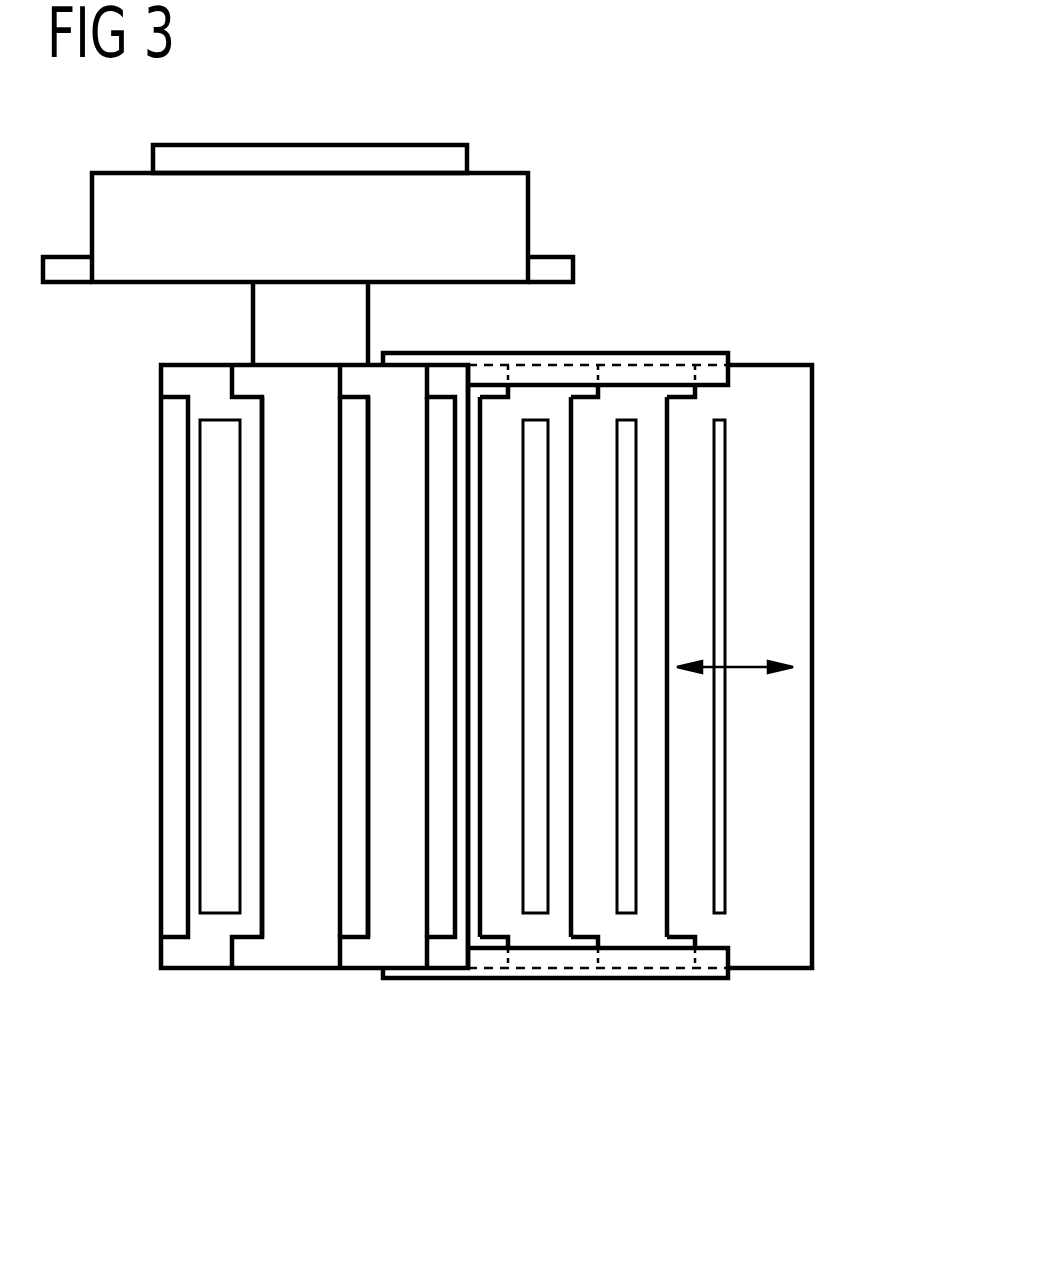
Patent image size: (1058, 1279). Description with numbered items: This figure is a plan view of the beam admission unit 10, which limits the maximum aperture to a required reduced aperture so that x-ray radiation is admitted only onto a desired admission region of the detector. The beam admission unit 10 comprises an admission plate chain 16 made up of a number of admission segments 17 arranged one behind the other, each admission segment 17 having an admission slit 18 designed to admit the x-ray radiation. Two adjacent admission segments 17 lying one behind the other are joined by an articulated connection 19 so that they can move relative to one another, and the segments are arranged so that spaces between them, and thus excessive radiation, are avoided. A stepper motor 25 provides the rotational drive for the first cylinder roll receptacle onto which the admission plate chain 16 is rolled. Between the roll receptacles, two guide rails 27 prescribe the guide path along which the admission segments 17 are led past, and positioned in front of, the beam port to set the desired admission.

The beam admission unit 10 is at (825, 353).
The admission plate chain 16 is at (213, 993).
The admission segment 17 is at (285, 946).
The admission slit 18 is at (535, 905).
The articulated connection 19 is at (357, 972).
The stepper motor 25 is at (495, 172).
The guide rail 27 is at (653, 350).